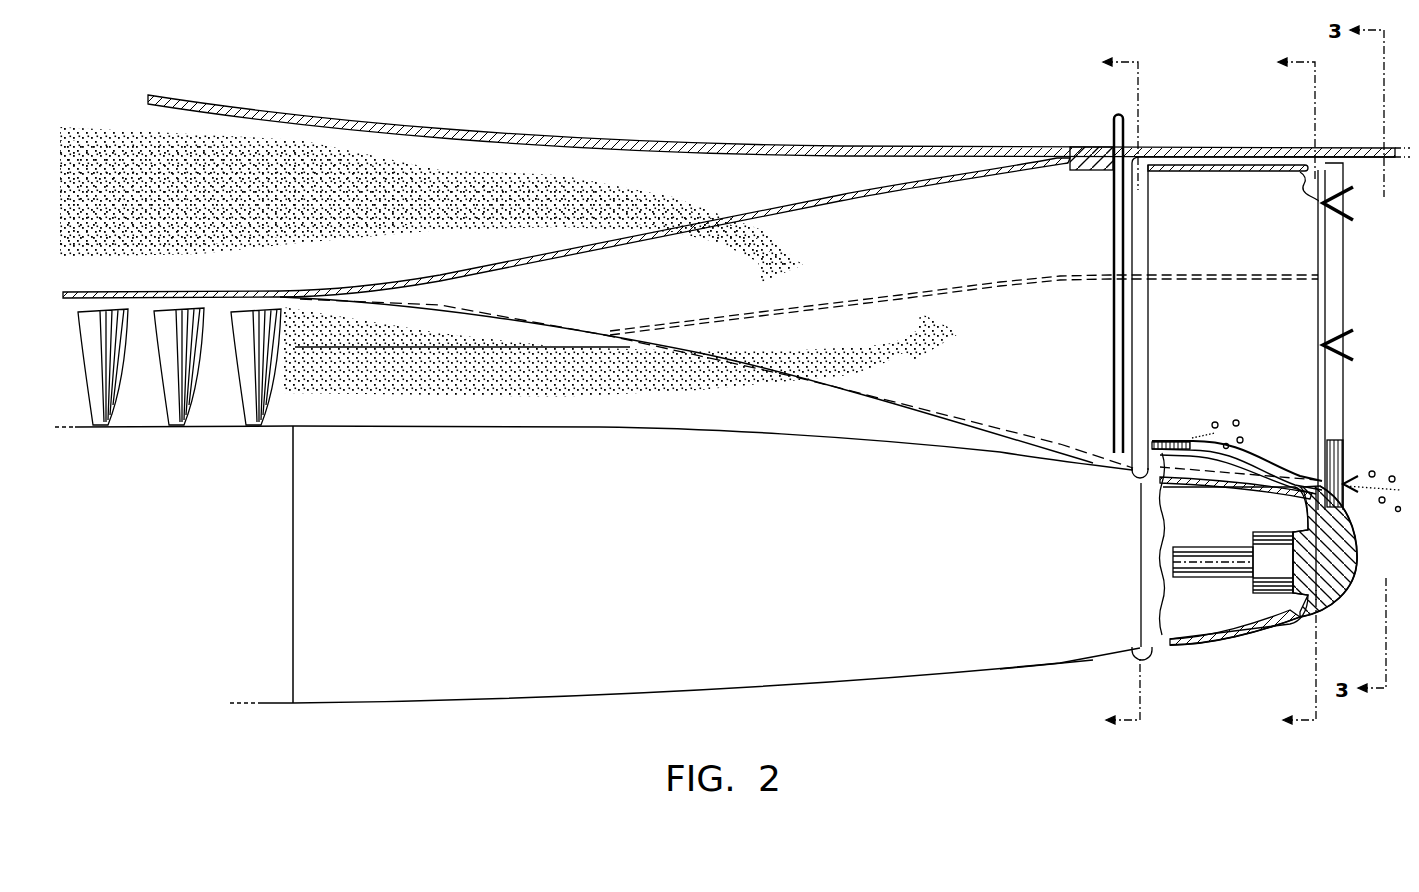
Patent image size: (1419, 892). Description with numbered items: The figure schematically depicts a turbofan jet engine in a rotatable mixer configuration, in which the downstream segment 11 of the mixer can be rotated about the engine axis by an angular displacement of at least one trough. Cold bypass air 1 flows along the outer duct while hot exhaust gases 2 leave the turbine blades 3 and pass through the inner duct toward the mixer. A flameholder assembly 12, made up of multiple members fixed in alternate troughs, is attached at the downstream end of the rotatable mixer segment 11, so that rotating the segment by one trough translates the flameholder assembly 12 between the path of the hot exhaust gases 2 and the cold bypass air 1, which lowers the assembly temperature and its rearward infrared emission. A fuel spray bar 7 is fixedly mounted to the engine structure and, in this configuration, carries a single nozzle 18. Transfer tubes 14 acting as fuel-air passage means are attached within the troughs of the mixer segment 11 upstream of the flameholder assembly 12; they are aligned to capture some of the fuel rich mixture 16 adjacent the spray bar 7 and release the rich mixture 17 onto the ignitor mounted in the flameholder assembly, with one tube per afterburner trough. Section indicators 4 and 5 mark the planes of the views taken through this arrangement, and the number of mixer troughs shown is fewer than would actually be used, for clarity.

The cold bypass air 1 is at (536, 192).
The hot exhaust gases 2 is at (700, 391).
The turbine blades 3 is at (237, 397).
The fuel spray bar 7 is at (1112, 127).
The downstream segment of the mixer 11 is at (1222, 165).
The flameholder assembly 12 is at (1347, 288).
The transfer tubes 14 is at (1282, 472).
The fuel rich mixture 16 is at (1145, 440).
The released rich mixture 17 is at (1362, 472).
The nozzle 18 is at (1136, 462).
The section line 4- 4 is at (1287, 392).
The section line 5- 5 is at (1111, 392).